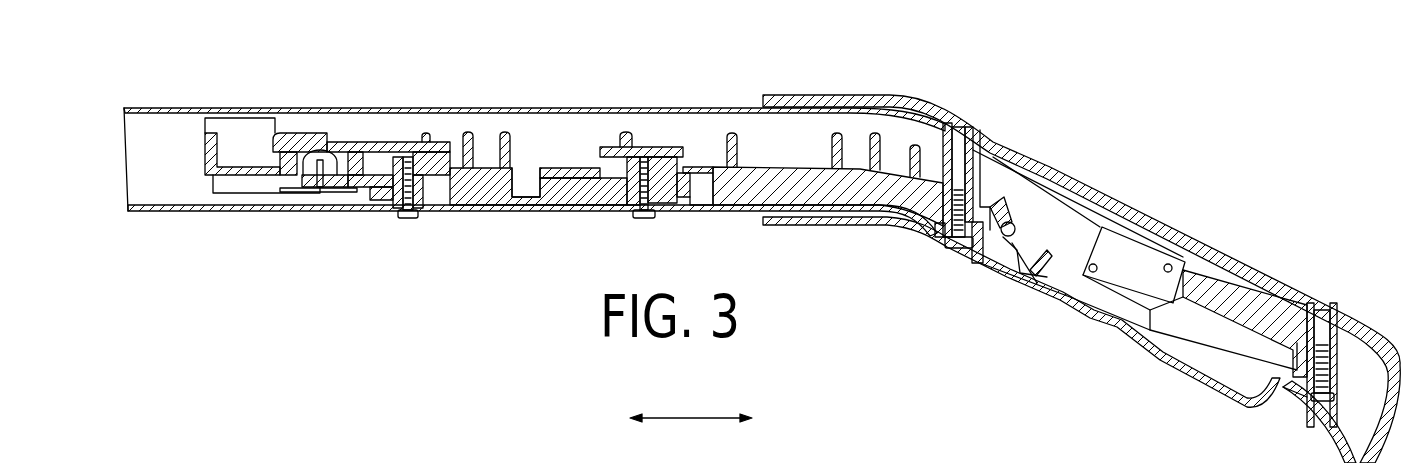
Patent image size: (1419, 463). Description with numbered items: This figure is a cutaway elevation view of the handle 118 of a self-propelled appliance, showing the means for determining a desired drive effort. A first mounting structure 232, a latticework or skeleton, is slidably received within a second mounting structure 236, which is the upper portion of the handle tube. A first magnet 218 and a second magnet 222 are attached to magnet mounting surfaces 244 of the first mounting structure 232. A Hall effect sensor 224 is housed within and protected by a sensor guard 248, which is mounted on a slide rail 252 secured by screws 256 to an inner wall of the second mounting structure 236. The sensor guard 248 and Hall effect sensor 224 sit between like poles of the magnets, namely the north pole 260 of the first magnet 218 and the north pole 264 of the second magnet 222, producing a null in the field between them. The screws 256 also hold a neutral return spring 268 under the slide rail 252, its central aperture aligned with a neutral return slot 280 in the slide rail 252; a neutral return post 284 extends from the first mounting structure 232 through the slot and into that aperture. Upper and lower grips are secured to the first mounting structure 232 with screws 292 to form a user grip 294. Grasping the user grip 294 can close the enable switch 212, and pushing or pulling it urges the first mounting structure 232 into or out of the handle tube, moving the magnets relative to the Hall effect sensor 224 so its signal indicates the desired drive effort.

The handle 118 is at (716, 103).
The enable switch 212 is at (1132, 257).
The first magnet 218 is at (290, 150).
The second magnet 222 is at (360, 150).
The Hall effect sensor 224 is at (320, 188).
The first mounting structure 232 is at (350, 151).
The second mounting structure 236 is at (657, 107).
The magnet mounting surfaces 244 is at (278, 158).
The sensor guard 248 is at (327, 188).
The slide rail 252 is at (457, 183).
The screws 256 is at (404, 217).
The north pole 260 is at (307, 188).
The north pole 264 is at (340, 174).
The neutral return spring 268 is at (563, 193).
The neutral return slot 280 is at (553, 176).
The neutral return post 284 is at (527, 170).
The screws 292 is at (950, 242).
The user grip 294 is at (1088, 188).